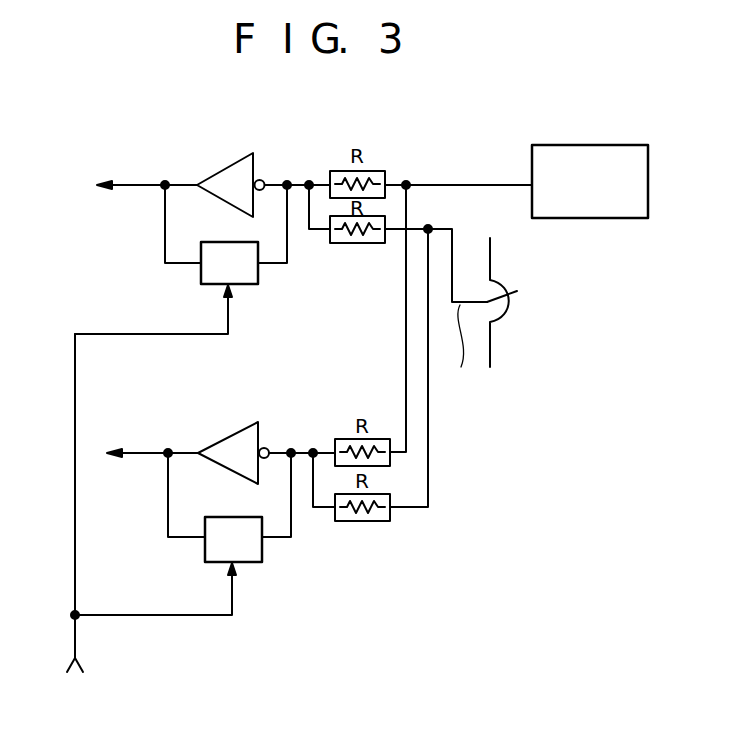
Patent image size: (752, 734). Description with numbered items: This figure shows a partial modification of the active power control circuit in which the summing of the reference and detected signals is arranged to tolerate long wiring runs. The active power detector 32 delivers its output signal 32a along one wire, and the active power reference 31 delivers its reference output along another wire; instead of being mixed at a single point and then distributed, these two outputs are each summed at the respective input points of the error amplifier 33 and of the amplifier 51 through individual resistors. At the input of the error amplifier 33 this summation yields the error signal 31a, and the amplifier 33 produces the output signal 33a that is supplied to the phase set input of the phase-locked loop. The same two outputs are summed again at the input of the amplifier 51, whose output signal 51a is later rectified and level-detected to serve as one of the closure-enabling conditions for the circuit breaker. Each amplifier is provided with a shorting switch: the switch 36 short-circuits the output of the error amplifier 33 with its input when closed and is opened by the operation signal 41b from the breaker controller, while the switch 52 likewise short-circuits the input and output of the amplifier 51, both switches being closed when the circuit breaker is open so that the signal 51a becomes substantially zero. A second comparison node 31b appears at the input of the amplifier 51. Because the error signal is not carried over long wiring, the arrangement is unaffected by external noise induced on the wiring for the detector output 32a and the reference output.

The active power reference 31 is at (508, 318).
The error signal 31a is at (320, 182).
The second comparison node 31b is at (320, 450).
The active power detector 32 is at (607, 144).
The signal output from active power detector 32a is at (462, 183).
The error amplifier 33 is at (235, 165).
The output signal from amplifier 33a is at (133, 183).
The switch 36 is at (199, 281).
The operation signal 41b is at (151, 491).
The amplifier 51 is at (230, 440).
The signal output from amplifier 51a is at (141, 452).
The switch 52 is at (201, 554).